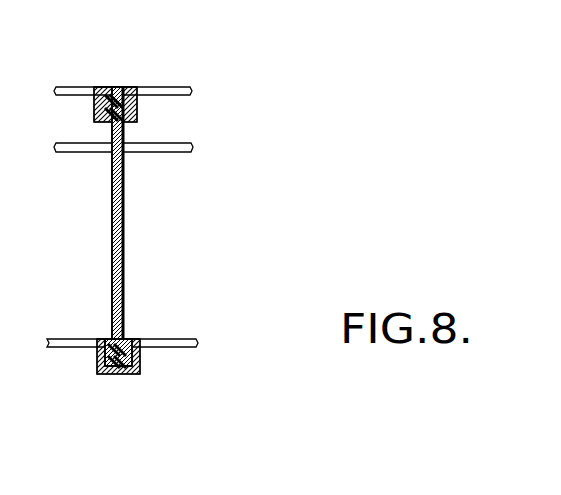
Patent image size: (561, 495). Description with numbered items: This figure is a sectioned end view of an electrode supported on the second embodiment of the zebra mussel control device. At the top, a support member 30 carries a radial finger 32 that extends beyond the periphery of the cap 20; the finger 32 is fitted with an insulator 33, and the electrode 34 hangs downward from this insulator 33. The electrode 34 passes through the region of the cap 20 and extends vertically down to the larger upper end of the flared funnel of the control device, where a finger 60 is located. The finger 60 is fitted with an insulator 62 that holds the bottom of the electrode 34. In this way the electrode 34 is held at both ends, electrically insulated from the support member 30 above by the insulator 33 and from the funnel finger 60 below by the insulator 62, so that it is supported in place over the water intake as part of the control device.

The cap 20 is at (178, 148).
The support member 30 is at (170, 87).
The radial finger 32 is at (115, 87).
The insulator 33 is at (123, 123).
The electrode 34 is at (122, 208).
The finger 60 is at (140, 367).
The insulator 62 is at (137, 339).